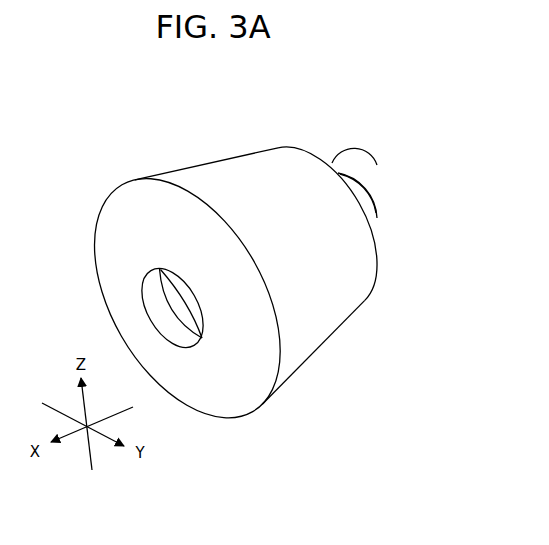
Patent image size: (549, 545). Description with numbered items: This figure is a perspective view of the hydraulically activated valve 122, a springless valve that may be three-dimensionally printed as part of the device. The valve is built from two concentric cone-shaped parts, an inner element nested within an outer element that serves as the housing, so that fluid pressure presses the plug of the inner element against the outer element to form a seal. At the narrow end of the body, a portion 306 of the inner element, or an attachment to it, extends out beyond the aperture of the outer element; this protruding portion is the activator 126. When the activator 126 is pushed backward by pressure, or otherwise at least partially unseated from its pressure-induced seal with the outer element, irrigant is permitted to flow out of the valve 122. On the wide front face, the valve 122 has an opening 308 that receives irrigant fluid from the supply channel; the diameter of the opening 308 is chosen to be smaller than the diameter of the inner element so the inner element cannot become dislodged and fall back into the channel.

The hydraulically activated valve 122 is at (151, 154).
The activator 126 is at (378, 191).
The portion of inner element extending beyond the aperture 306 is at (355, 160).
The opening 308 is at (137, 272).